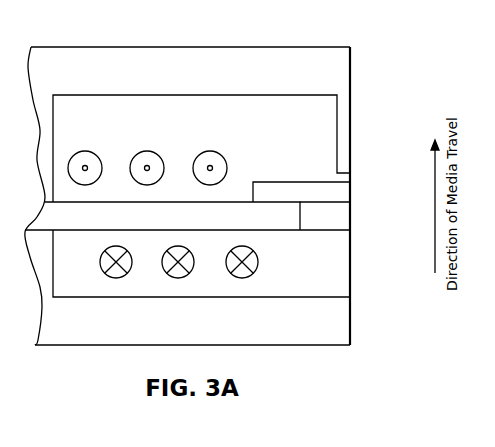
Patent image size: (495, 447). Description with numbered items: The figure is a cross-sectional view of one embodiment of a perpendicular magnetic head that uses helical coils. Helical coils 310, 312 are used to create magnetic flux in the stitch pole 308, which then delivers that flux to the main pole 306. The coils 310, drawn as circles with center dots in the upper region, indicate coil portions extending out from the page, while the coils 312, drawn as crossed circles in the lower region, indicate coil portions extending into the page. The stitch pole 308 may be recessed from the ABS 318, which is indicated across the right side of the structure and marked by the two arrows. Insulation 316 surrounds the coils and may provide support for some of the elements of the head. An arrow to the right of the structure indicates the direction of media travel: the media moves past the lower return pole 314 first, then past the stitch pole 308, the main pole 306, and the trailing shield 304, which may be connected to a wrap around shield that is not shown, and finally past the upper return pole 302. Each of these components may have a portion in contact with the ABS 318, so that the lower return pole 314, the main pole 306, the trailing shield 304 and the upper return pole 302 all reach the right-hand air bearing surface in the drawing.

The upper return pole 302 is at (238, 80).
The trailing shield 304 is at (351, 137).
The main pole 306 is at (351, 185).
The stitch pole 308 is at (188, 222).
The helical coils 310 is at (86, 151).
The helical coils 312 is at (102, 270).
The lower return pole 314 is at (188, 330).
The insulation 316 is at (271, 145).
The ABS 318 is at (351, 65).